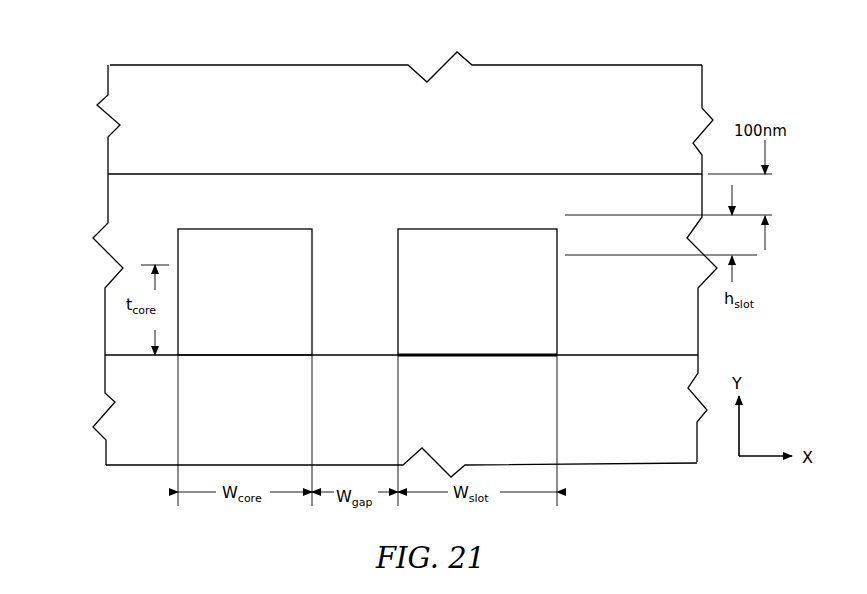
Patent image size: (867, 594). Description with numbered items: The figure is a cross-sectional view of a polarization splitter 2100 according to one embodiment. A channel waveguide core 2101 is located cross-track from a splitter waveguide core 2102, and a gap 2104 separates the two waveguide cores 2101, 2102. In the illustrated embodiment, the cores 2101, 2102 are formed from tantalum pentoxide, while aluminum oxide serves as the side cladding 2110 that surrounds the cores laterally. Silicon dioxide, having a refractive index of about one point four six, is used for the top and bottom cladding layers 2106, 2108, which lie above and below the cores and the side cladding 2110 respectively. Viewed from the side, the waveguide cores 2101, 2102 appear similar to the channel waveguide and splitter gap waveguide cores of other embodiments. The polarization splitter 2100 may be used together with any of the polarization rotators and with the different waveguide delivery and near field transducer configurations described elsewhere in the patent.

The polarization splitter 2100 is at (371, 100).
The channel waveguide core 2101 is at (245, 292).
The splitter waveguide core 2102 is at (477, 292).
The gap 2104 is at (355, 292).
The top cladding layer 2106 is at (118, 88).
The bottom cladding layer 2108 is at (118, 416).
The side cladding 2110 is at (120, 206).